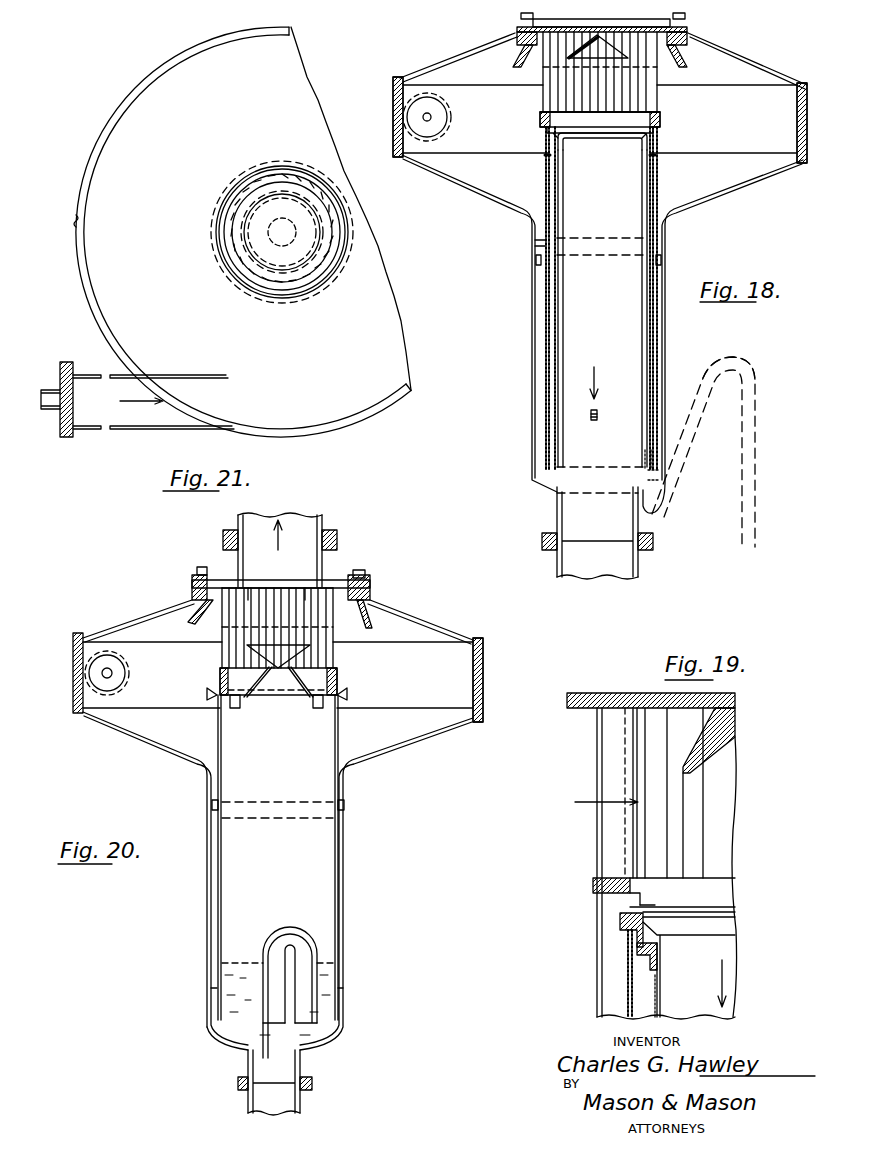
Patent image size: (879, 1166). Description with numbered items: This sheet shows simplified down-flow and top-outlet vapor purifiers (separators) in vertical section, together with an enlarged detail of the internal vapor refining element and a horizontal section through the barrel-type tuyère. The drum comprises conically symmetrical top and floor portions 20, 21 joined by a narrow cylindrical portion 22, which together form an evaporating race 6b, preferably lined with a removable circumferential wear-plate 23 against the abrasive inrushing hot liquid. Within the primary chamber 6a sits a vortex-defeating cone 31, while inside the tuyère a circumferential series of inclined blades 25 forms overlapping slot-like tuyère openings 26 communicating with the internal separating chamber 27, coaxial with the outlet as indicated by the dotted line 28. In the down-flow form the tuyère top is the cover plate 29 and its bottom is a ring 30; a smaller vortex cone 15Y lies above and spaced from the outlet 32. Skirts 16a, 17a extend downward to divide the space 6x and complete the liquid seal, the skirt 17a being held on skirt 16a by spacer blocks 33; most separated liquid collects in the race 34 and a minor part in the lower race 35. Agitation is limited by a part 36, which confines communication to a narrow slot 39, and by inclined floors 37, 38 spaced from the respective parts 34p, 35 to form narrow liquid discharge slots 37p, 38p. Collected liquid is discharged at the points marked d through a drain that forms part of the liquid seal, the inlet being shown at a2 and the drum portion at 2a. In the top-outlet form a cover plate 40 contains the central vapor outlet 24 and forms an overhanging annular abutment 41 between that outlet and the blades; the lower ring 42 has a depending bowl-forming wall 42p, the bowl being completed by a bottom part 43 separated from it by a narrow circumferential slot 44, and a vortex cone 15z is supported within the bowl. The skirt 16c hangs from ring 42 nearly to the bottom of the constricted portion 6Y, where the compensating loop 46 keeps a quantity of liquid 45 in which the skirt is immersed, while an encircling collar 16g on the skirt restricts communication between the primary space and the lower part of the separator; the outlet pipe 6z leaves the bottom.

In FIG. 18, the drain outlet 2a is at (667, 335).
In FIG. 18, the primary chamber 6a is at (600, 119).
In FIG. 21, the primary chamber 6a is at (282, 218).
In FIG. 20, the primary chamber 6a is at (278, 675).
In FIG. 18, the evaporating race 6b is at (600, 120).
In FIG. 21, the evaporating race 6b is at (243, 232).
In FIG. 18, the space surrounding the standpipe 6x is at (657, 369).
In FIG. 20, the constricted portion of the separator 6Y is at (345, 918).
In FIG. 18, the outlet pipe 6z is at (597, 533).
In FIG. 20, the outlet pipe 6z is at (275, 1082).
In FIG. 18, the liquid discharge points d is at (747, 372).
In FIG. 21, the inlet pipe a2 is at (56, 420).
In FIG. 18, the vortex cone 15Y is at (597, 46).
In FIG. 19, the vortex cone 15Y is at (718, 755).
In FIG. 20, the vortex-defeating cone 15z is at (278, 656).
In FIG. 18, the skirt portion 16a is at (545, 183).
In FIG. 20, the skirt 16c is at (222, 752).
In FIG. 20, the encircling collar or flange 16g is at (212, 806).
In FIG. 18, the skirt portion 17a is at (650, 188).
In FIG. 18, the conical top portion 20 is at (492, 42).
In FIG. 20, the conical top portion 20 is at (278, 618).
In FIG. 18, the conical floor portion 21 is at (480, 190).
In FIG. 20, the conical floor portion 21 is at (73, 668).
In FIG. 18, the narrow cylindrical portion 22 is at (393, 130).
In FIG. 21, the narrow cylindrical portion 22 is at (84, 221).
In FIG. 20, the narrow cylindrical portion 22 is at (76, 698).
In FIG. 20, the circumferential wear-plate 23 is at (473, 684).
In FIG. 20, the vapor outlet 24 is at (280, 550).
In FIG. 18, the inclined or tangential blades 25 is at (543, 80).
In FIG. 21, the inclined or tangential blades 25 is at (232, 270).
In FIG. 20, the inclined or tangential blades 25 is at (222, 636).
In FIG. 19, the inclined or tangential blades 25 is at (610, 862).
In FIG. 21, the tuyère openings 26 is at (252, 288).
In FIG. 19, the tuyère openings 26 is at (659, 809).
In FIG. 18, the separating chamber 27 is at (600, 96).
In FIG. 21, the separating chamber 27 is at (282, 232).
In FIG. 20, the separating chamber 27 is at (277, 607).
In FIG. 19, the separating chamber 27 is at (667, 863).
In FIG. 21, the dotted line 28 is at (332, 285).
In FIG. 18, the cover plate 29 is at (649, 27).
In FIG. 19, the cover plate 29 is at (651, 691).
In FIG. 18, the ring 30 is at (540, 116).
In FIG. 19, the ring 30 is at (593, 884).
In FIG. 18, the vortex-defeating cone 31 is at (688, 63).
In FIG. 18, the outlet 32 is at (633, 210).
In FIG. 18, the spacer blocks 33 is at (546, 158).
In FIG. 18, the collecting race 34 is at (547, 132).
In FIG. 19, the collecting race 34 is at (612, 920).
In FIG. 19, the race part 34p is at (650, 880).
In FIG. 19, the second collecting race 35 is at (637, 950).
In FIG. 18, the agitation-preventing part 36 is at (535, 242).
In FIG. 18, the inclined floor 37 is at (552, 110).
In FIG. 19, the liquid discharge slot 37p is at (620, 925).
In FIG. 18, the inclined floor 38 is at (566, 142).
In FIG. 19, the inclined floor 38 is at (648, 938).
In FIG. 19, the liquid discharge slot 38p is at (628, 960).
In FIG. 18, the narrow slot 39 is at (532, 263).
In FIG. 20, the cover plate 40 is at (340, 580).
In FIG. 20, the overhanging annular abutment 41 is at (300, 590).
In FIG. 20, the ring 42 is at (220, 672).
In FIG. 20, the bowl-forming wall 42p is at (303, 693).
In FIG. 20, the bottom part 43 is at (255, 690).
In FIG. 20, the circumferential slot 44 is at (213, 698).
In FIG. 20, the liquid 45 is at (277, 999).
In FIG. 20, the compensating loop 46 is at (270, 935).